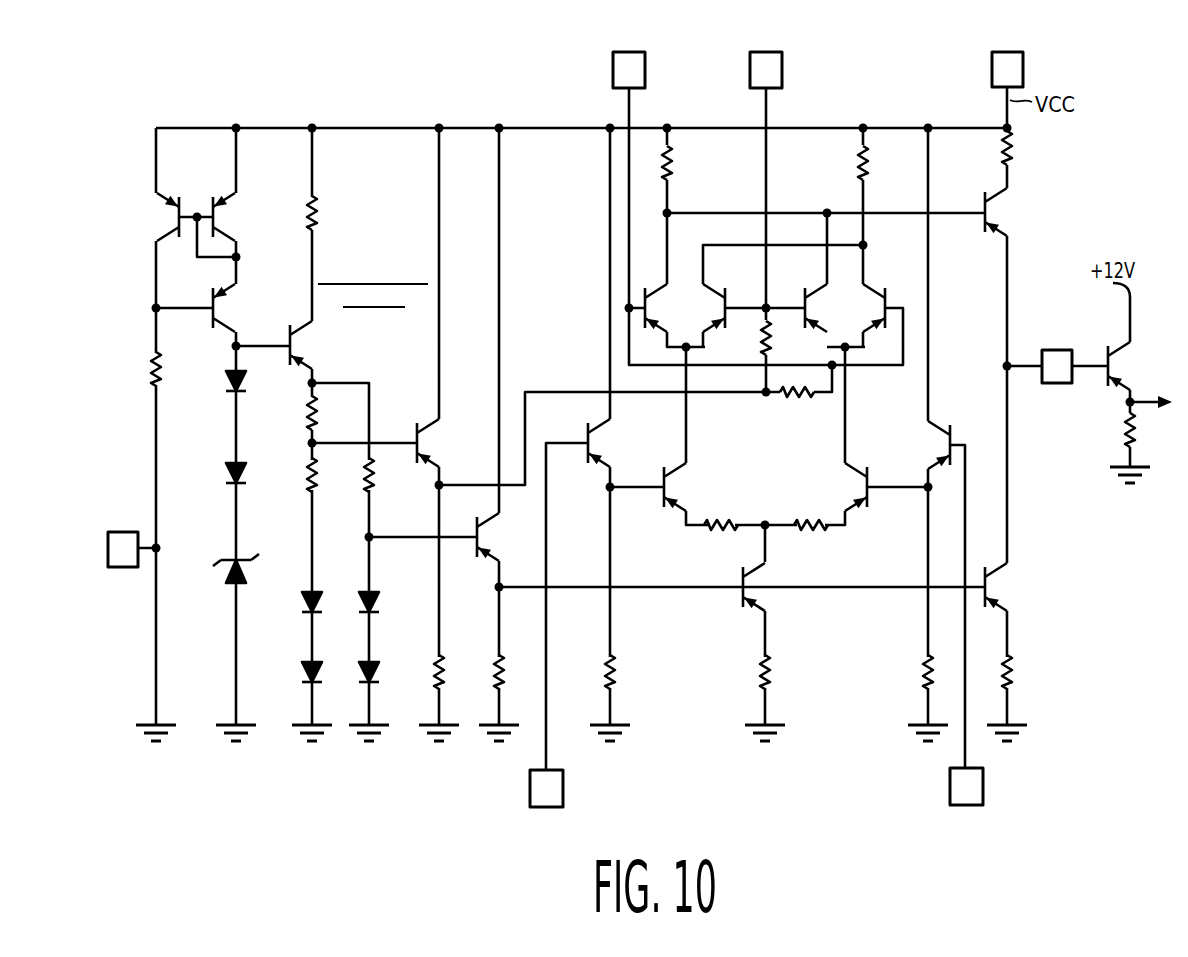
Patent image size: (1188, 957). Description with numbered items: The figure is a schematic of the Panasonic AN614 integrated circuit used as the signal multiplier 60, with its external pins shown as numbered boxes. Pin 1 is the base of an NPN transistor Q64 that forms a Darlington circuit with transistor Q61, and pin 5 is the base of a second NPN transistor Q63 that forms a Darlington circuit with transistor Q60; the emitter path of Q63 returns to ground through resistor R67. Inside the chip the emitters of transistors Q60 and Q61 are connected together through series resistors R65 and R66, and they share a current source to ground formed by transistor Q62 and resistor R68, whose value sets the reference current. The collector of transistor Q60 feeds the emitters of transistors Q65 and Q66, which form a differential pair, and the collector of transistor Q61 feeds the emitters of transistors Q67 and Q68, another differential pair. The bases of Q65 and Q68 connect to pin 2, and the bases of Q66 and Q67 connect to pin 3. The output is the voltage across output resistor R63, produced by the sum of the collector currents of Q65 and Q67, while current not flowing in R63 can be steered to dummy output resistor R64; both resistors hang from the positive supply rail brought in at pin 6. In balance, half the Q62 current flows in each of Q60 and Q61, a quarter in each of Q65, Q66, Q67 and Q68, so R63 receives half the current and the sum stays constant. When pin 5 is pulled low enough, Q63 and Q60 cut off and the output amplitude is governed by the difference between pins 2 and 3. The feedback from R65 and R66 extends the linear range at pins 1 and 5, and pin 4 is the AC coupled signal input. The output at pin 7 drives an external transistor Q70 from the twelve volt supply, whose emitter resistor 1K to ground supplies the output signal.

The signal multiplier 60 is at (561, 291).
The transistor Q60 is at (691, 487).
The transistor Q61 is at (840, 487).
The transistor Q62 is at (776, 595).
The transistor Q63 is at (615, 443).
The transistor Q64 is at (921, 445).
The transistor Q65 is at (671, 308).
The transistor Q66 is at (725, 297).
The transistor Q67 is at (829, 308).
The transistor Q68 is at (885, 297).
The transistor Q70 is at (1134, 366).
The output resistor R63 is at (689, 163).
The dummy output resistor R64 is at (839, 163).
The resistor R65 is at (721, 544).
The resistor R66 is at (812, 544).
The resistor R67 is at (632, 672).
The resistor R68 is at (787, 672).
The one kilohm resistor 1K is at (1111, 430).
The pin 1 is at (966, 625).
The pin 2 is at (629, 70).
The pin 3 is at (766, 70).
The pin 4 is at (123, 549).
The pin 5 is at (546, 788).
The pin 6 is at (1007, 69).
The pin 7 is at (1057, 367).